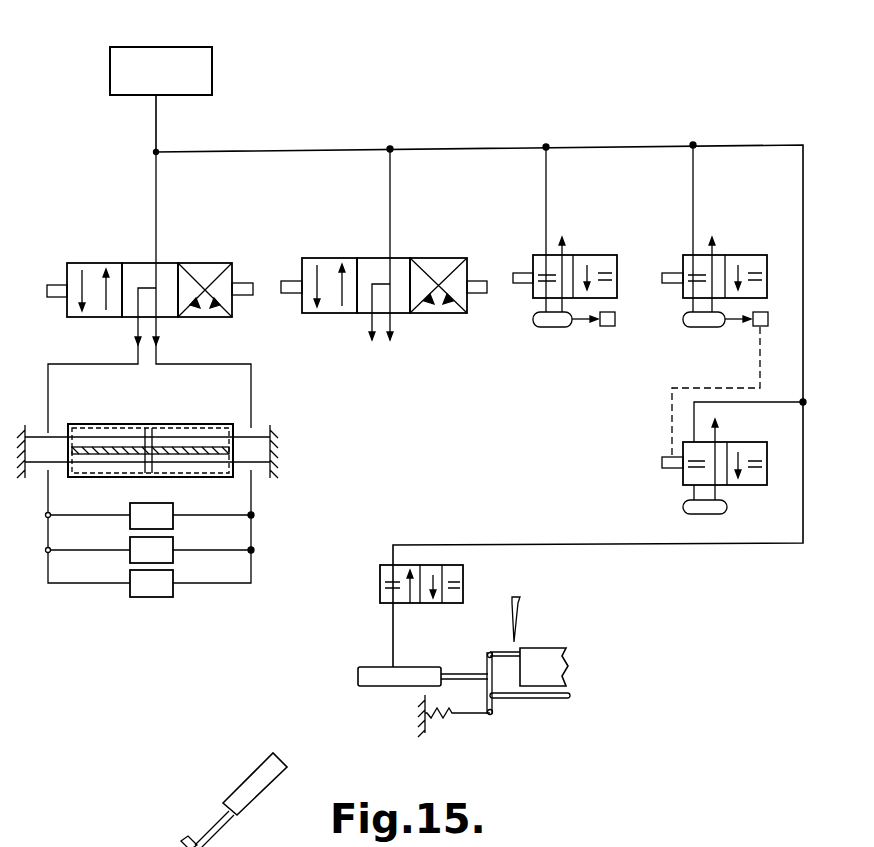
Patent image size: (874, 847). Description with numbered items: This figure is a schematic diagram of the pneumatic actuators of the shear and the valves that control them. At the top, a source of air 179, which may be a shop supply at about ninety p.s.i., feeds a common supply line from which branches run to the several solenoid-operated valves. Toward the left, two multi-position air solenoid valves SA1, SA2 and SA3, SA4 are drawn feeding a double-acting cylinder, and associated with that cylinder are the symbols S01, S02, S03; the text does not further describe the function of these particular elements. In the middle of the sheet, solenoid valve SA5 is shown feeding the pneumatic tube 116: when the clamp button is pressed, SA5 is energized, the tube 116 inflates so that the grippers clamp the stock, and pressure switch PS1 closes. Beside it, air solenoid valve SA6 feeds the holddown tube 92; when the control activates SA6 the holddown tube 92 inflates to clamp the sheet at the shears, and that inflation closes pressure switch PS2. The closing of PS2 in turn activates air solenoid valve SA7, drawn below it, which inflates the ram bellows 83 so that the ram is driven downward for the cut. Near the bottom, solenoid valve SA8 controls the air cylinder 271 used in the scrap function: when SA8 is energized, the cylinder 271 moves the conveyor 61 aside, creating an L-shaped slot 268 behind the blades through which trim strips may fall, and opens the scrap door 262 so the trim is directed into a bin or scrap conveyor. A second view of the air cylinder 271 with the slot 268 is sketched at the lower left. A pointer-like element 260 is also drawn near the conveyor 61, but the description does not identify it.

The source of air 179 is at (194, 47).
The air solenoid valve SA1 is at (110, 318).
The air solenoid valve SA2 is at (200, 318).
The air solenoid valve SA3 is at (432, 314).
The air solenoid valve SA4 is at (347, 314).
The solenoid valve SA5 is at (533, 262).
The air solenoid valve SA6 is at (685, 258).
The air solenoid valve SA7 is at (690, 477).
The solenoid valve SA8 is at (413, 604).
The pressure switch PS1 is at (605, 328).
The pressure switch PS2 is at (757, 328).
The pneumatic tube 116 is at (560, 322).
The holddown tube 92 is at (708, 330).
The ram bellows 83 is at (702, 510).
The air cylinder 271 is at (372, 668).
The pointer 260 is at (518, 610).
The conveyor 61 is at (548, 670).
The scrap door 262 is at (515, 698).
The L-shaped slot 268 is at (112, 840).
The solenoid valve S01 is at (151, 516).
The solenoid valve S02 is at (151, 550).
The solenoid valve S03 is at (151, 583).